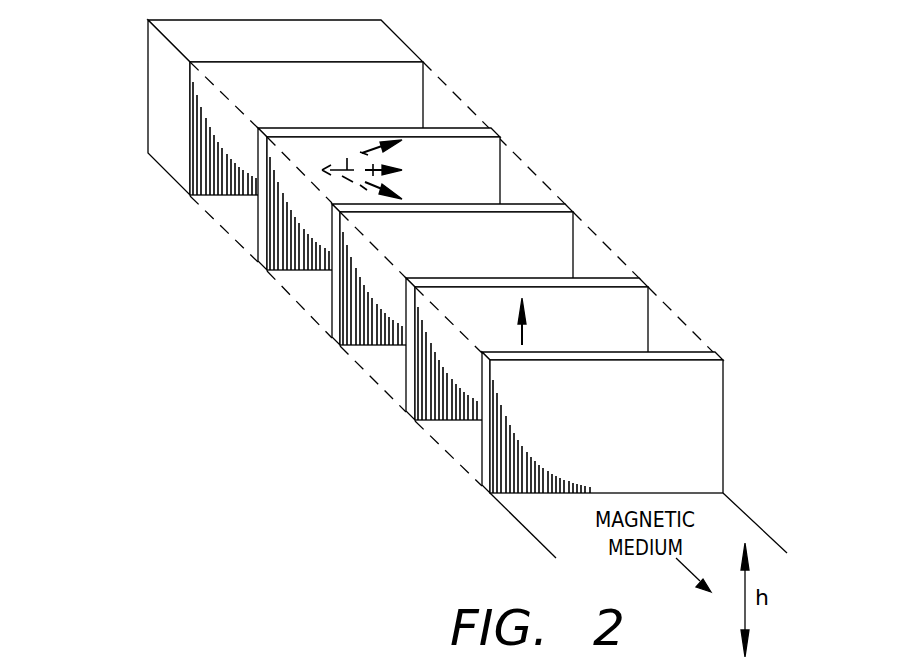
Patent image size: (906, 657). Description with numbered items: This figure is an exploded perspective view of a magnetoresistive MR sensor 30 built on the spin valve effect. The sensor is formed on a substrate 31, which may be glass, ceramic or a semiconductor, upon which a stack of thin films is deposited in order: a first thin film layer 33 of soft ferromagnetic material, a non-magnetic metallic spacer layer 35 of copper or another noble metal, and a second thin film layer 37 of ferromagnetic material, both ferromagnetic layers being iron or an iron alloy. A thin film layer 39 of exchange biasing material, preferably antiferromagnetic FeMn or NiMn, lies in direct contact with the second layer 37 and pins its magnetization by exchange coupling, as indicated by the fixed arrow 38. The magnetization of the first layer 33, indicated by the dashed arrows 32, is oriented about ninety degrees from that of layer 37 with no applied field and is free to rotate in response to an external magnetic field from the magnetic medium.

The MR sensor 30 is at (580, 98).
The substrate 31 is at (394, 50).
The arrow 32 is at (347, 160).
The first thin film layer of soft ferromagnetic material 33 is at (473, 126).
The non-magnetic metallic spacer layer 35 is at (541, 201).
The second thin film layer of ferromagnetic material 37 is at (605, 275).
The arrow 38 is at (523, 342).
The thin film layer of exchange biasing material 39 is at (718, 420).